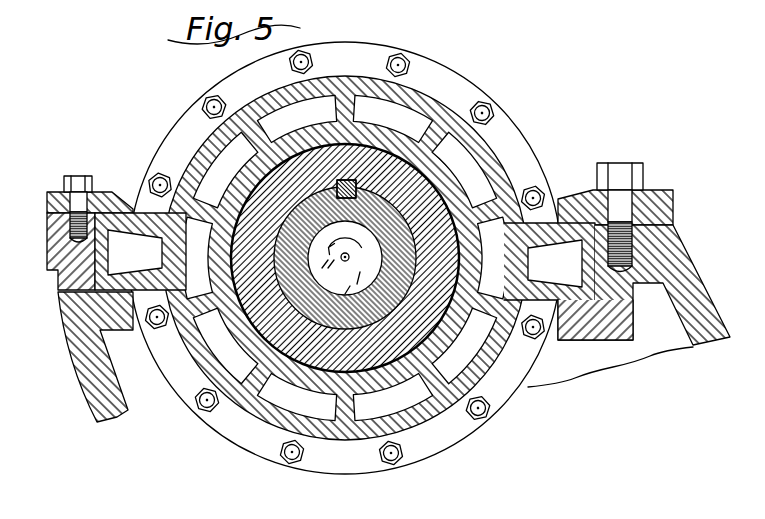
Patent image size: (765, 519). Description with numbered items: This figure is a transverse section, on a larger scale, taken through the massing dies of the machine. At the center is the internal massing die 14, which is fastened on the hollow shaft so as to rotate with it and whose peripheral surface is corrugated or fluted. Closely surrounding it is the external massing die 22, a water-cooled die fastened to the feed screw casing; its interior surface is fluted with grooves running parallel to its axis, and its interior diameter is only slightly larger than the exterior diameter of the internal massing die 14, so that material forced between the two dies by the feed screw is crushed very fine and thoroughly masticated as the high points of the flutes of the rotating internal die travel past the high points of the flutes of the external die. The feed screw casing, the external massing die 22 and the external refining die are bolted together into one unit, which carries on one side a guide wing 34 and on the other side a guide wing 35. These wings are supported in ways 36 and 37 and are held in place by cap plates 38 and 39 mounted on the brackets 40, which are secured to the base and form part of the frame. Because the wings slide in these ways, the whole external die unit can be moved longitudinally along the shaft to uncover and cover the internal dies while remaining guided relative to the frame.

The internal massing die 14 is at (220, 423).
The external massing die 22 is at (348, 375).
The guide wing 34 is at (572, 197).
The guide wing 35 is at (133, 208).
The way 36 is at (597, 290).
The way 37 is at (67, 285).
The cap plate 38 is at (660, 190).
The cap plate 39 is at (50, 192).
The bracket 40 is at (90, 382).